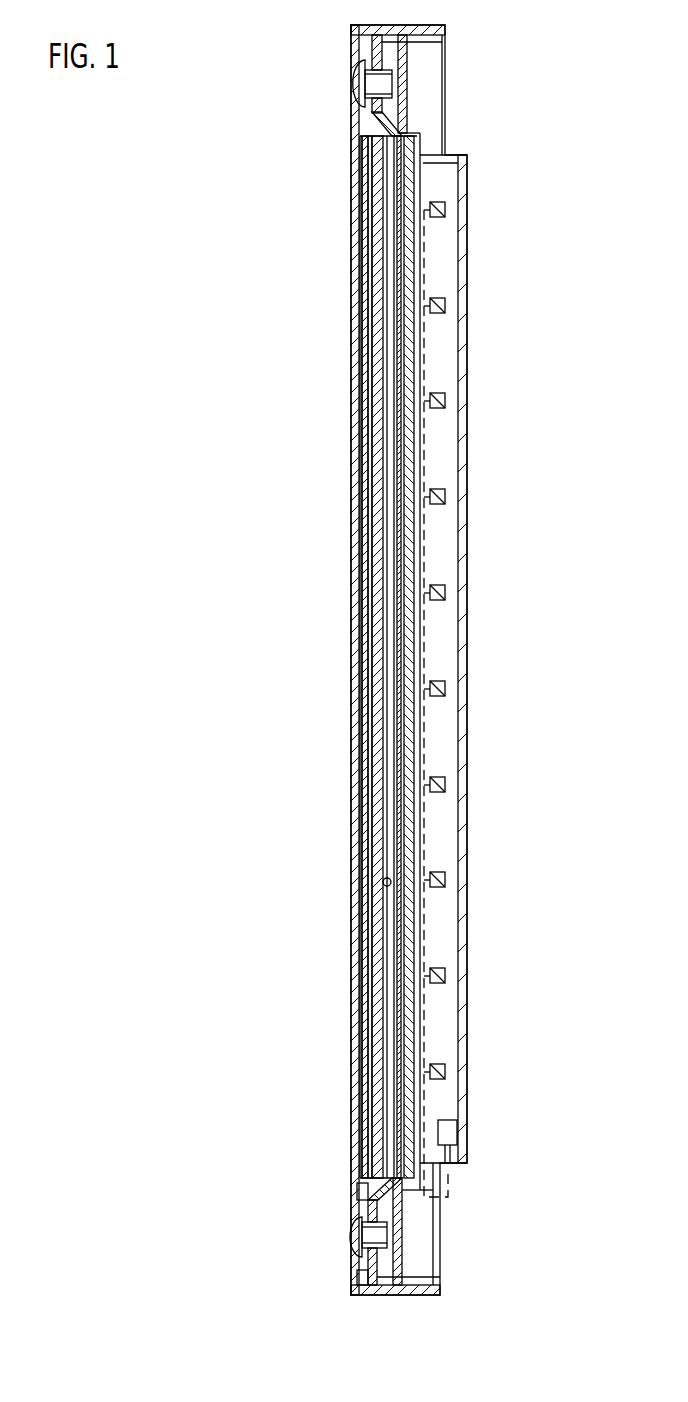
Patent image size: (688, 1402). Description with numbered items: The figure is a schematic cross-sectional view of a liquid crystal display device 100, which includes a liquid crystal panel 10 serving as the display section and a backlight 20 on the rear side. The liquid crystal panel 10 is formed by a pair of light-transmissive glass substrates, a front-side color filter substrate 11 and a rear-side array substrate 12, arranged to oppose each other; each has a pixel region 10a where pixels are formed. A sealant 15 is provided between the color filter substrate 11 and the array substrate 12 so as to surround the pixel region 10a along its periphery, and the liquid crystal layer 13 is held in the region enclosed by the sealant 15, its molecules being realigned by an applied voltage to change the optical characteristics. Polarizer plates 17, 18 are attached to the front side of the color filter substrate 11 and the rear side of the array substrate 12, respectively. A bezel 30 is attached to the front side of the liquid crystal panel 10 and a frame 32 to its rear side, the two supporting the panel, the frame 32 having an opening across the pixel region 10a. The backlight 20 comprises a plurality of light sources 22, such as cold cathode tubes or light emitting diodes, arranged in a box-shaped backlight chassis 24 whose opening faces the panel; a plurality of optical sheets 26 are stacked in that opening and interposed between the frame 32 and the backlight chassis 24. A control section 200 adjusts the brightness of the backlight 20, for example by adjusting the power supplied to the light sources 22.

The liquid crystal display device 100 is at (311, 517).
The liquid crystal panel 10 is at (365, 1068).
The pixel region 10a is at (351, 596).
The color filter substrate 11 is at (365, 738).
The array substrate 12 is at (378, 688).
The liquid crystal layer 13 is at (371, 813).
The sealant 15 is at (362, 1179).
The polarizer plate 17 is at (362, 985).
The polarizer plate 18 is at (384, 881).
The backlight 20 is at (486, 148).
The light source 22 is at (444, 202).
The backlight chassis 24 is at (463, 1000).
The optical sheet 26 is at (400, 432).
The bezel 30 is at (350, 1136).
The frame 32 is at (380, 1205).
The control section 200 is at (455, 1150).